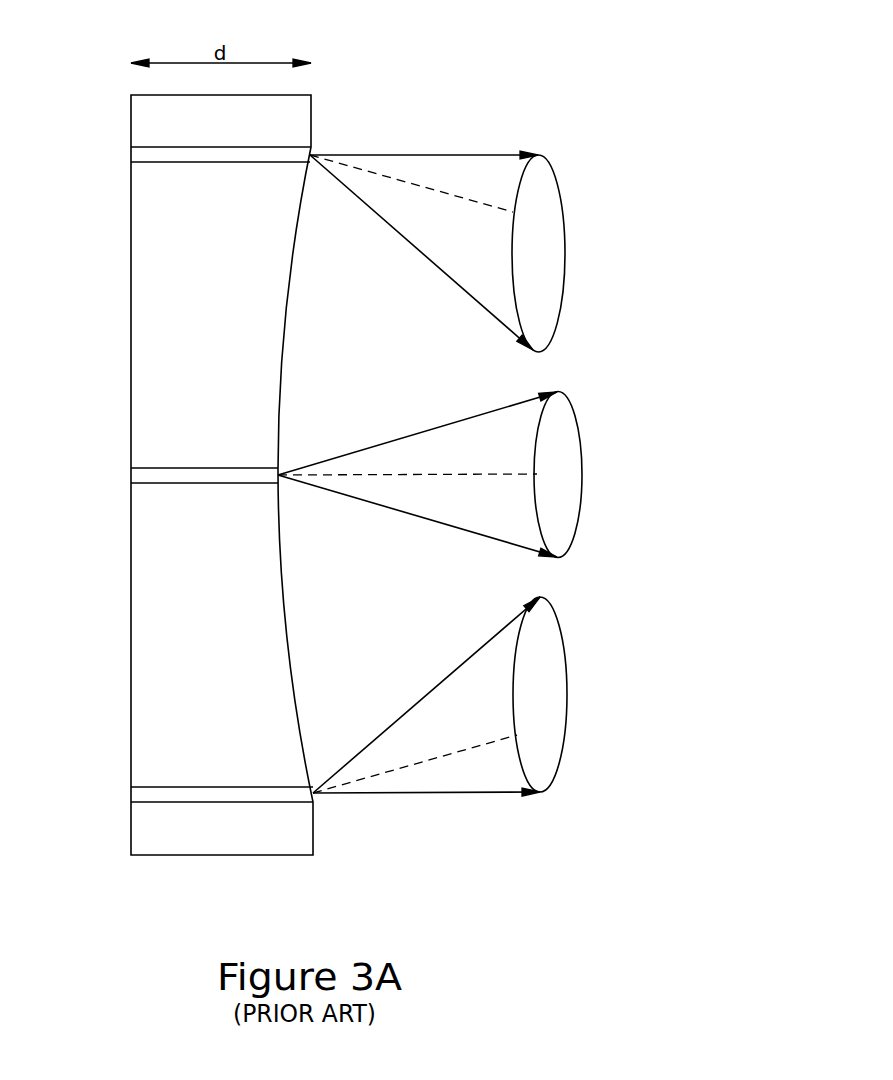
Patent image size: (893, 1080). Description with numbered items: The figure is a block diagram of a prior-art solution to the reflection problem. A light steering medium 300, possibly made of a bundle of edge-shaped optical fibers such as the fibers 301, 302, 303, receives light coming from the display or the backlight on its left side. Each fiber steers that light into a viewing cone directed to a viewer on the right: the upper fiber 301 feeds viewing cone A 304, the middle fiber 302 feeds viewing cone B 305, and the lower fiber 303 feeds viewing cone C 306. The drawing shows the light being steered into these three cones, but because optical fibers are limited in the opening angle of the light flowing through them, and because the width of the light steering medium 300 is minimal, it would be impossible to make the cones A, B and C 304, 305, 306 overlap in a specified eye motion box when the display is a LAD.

The light steering medium 300 is at (147, 313).
The edge shaped optical fiber 301 is at (131, 155).
The edge shaped optical fiber 302 is at (130, 475).
The edge shaped optical fiber 303 is at (133, 795).
The viewing cone A 304 is at (457, 153).
The viewing cone B 305 is at (430, 427).
The viewing cone C 306 is at (422, 695).